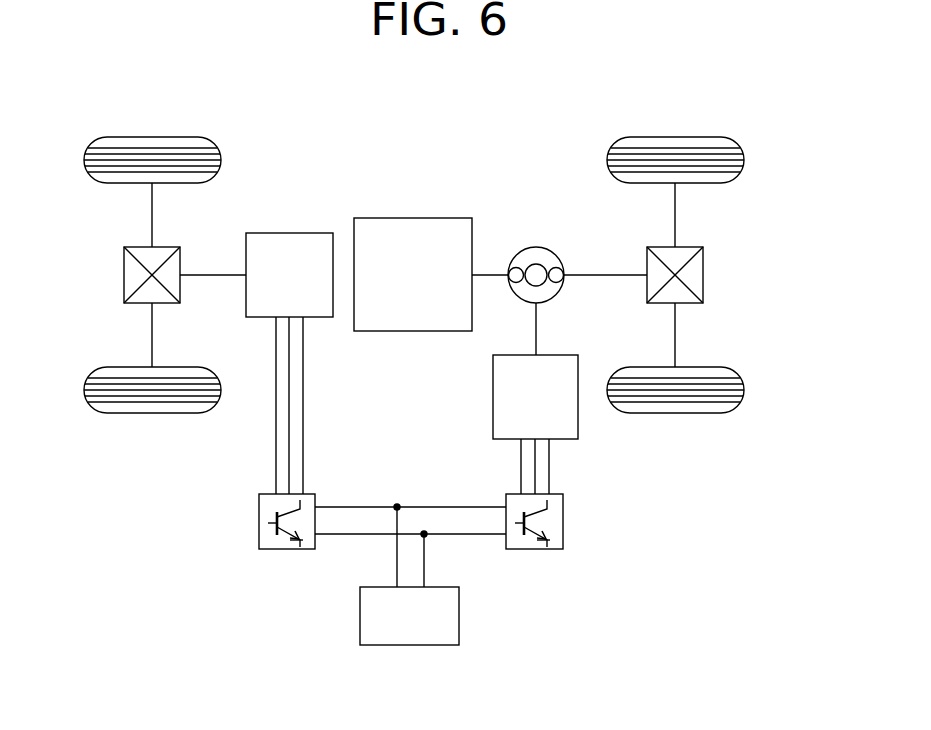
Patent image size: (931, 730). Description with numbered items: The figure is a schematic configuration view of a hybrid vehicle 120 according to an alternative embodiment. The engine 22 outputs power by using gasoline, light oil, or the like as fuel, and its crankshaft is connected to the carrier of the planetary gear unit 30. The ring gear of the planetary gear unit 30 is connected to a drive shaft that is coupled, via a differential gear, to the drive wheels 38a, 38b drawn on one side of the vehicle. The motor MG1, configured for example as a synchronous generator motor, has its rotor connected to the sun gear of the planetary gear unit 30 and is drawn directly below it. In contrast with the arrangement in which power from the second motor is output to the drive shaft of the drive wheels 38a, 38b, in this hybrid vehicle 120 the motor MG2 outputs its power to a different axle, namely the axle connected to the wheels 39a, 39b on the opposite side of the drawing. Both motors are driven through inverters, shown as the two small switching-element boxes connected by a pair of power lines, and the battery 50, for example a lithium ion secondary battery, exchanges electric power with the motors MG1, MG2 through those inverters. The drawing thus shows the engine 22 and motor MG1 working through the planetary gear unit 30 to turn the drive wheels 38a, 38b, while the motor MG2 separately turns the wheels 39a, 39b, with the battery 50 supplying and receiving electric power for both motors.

The hybrid vehicle 120 is at (497, 93).
The engine 22 is at (413, 218).
The planetary gear unit 30 is at (536, 247).
The drive wheel 38a is at (675, 137).
The drive wheel 38b is at (675, 413).
The wheel 39a is at (152, 137).
The wheel 39b is at (152, 413).
The battery 50 is at (459, 613).
The motor MG1 is at (493, 396).
The motor MG2 is at (289, 233).